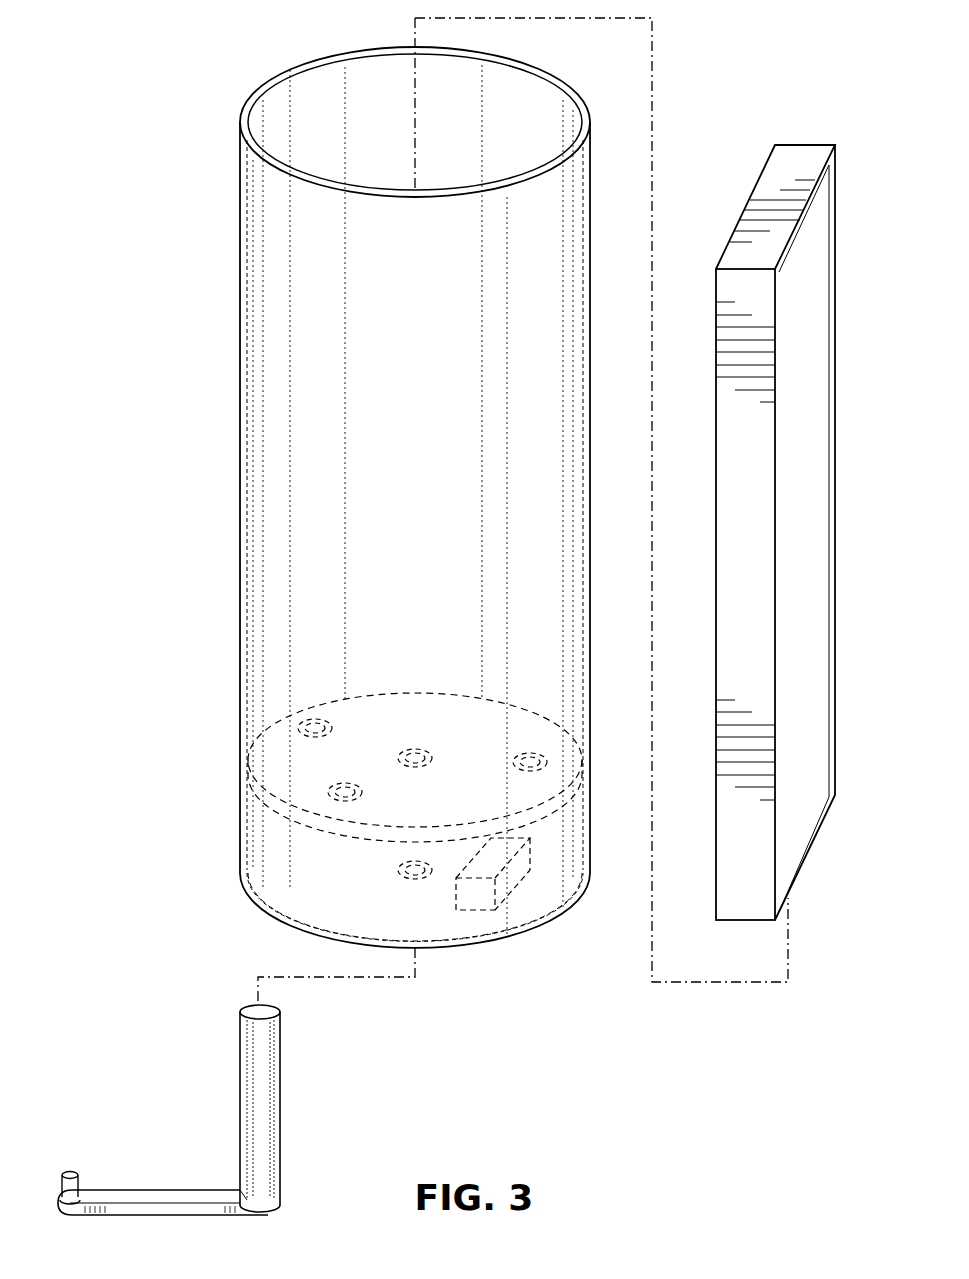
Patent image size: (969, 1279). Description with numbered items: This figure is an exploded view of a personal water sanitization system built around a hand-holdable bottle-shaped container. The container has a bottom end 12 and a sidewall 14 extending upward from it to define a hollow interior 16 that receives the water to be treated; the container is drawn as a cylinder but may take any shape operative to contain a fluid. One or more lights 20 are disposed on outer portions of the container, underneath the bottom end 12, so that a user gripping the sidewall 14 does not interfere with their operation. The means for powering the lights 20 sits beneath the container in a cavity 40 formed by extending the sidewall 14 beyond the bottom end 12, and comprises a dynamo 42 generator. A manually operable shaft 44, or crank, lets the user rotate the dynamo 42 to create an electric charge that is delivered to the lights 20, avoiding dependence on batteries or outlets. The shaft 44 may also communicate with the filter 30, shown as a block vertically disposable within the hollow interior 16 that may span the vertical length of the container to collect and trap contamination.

The bottom end 12 is at (305, 822).
The sidewall 14 is at (247, 213).
The hollow interior 16 is at (332, 90).
The lights 20 is at (343, 783).
The filter 30 is at (798, 150).
The cavity 40 is at (342, 888).
The dynamo 42 is at (480, 897).
The shaft 44 is at (270, 1192).